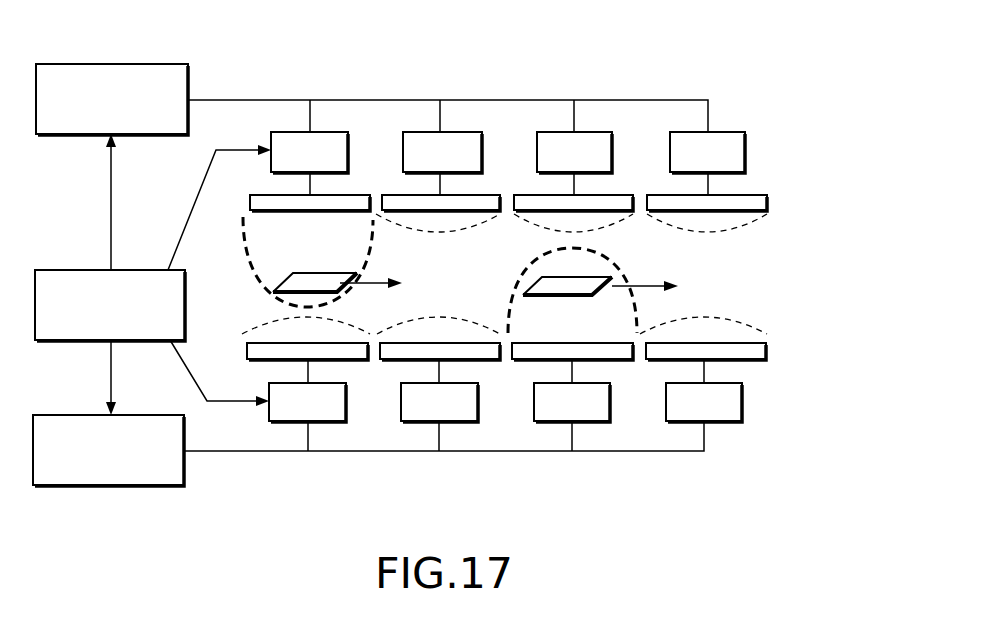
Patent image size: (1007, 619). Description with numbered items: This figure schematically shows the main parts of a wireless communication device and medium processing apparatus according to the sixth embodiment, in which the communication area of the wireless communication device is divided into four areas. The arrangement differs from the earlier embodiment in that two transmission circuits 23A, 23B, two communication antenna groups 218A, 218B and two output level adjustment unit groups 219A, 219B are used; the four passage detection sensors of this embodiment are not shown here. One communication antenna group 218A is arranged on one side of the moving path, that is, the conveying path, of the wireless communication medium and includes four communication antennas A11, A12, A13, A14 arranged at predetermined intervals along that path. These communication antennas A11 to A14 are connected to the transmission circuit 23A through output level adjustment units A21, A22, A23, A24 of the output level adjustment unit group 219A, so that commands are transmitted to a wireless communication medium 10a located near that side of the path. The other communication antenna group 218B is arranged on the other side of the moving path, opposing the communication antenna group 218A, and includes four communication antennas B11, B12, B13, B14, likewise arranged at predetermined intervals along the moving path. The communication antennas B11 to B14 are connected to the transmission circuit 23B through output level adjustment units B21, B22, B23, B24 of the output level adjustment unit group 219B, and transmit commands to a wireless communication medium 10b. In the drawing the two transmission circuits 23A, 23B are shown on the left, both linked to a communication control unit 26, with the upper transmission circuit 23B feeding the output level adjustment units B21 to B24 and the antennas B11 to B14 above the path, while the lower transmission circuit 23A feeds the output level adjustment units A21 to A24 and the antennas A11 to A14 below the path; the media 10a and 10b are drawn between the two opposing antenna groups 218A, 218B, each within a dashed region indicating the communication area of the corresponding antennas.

The transmission circuit 23B is at (65, 64).
The communication control unit 26 is at (61, 270).
The transmission circuit 23A is at (60, 415).
The output level adjustment unit group 219B is at (560, 118).
The communication antenna group 218B is at (559, 224).
The communication antenna group 218A is at (554, 366).
The output level adjustment unit group 219A is at (558, 438).
The output level adjustment unit B21 is at (330, 132).
The output level adjustment unit B22 is at (467, 132).
The output level adjustment unit B23 is at (596, 132).
The output level adjustment unit B24 is at (734, 132).
The communication antenna B11 is at (352, 210).
The communication antenna B12 is at (447, 210).
The communication antenna B13 is at (597, 210).
The communication antenna B14 is at (724, 210).
The communication antenna A11 is at (350, 359).
The communication antenna A12 is at (478, 359).
The communication antenna A13 is at (610, 359).
The communication antenna A14 is at (772, 352).
The output level adjustment unit A21 is at (282, 423).
The output level adjustment unit A22 is at (421, 423).
The output level adjustment unit A23 is at (551, 423).
The output level adjustment unit A24 is at (730, 423).
The wireless communication medium 10a is at (562, 297).
The wireless communication medium 10b is at (309, 273).